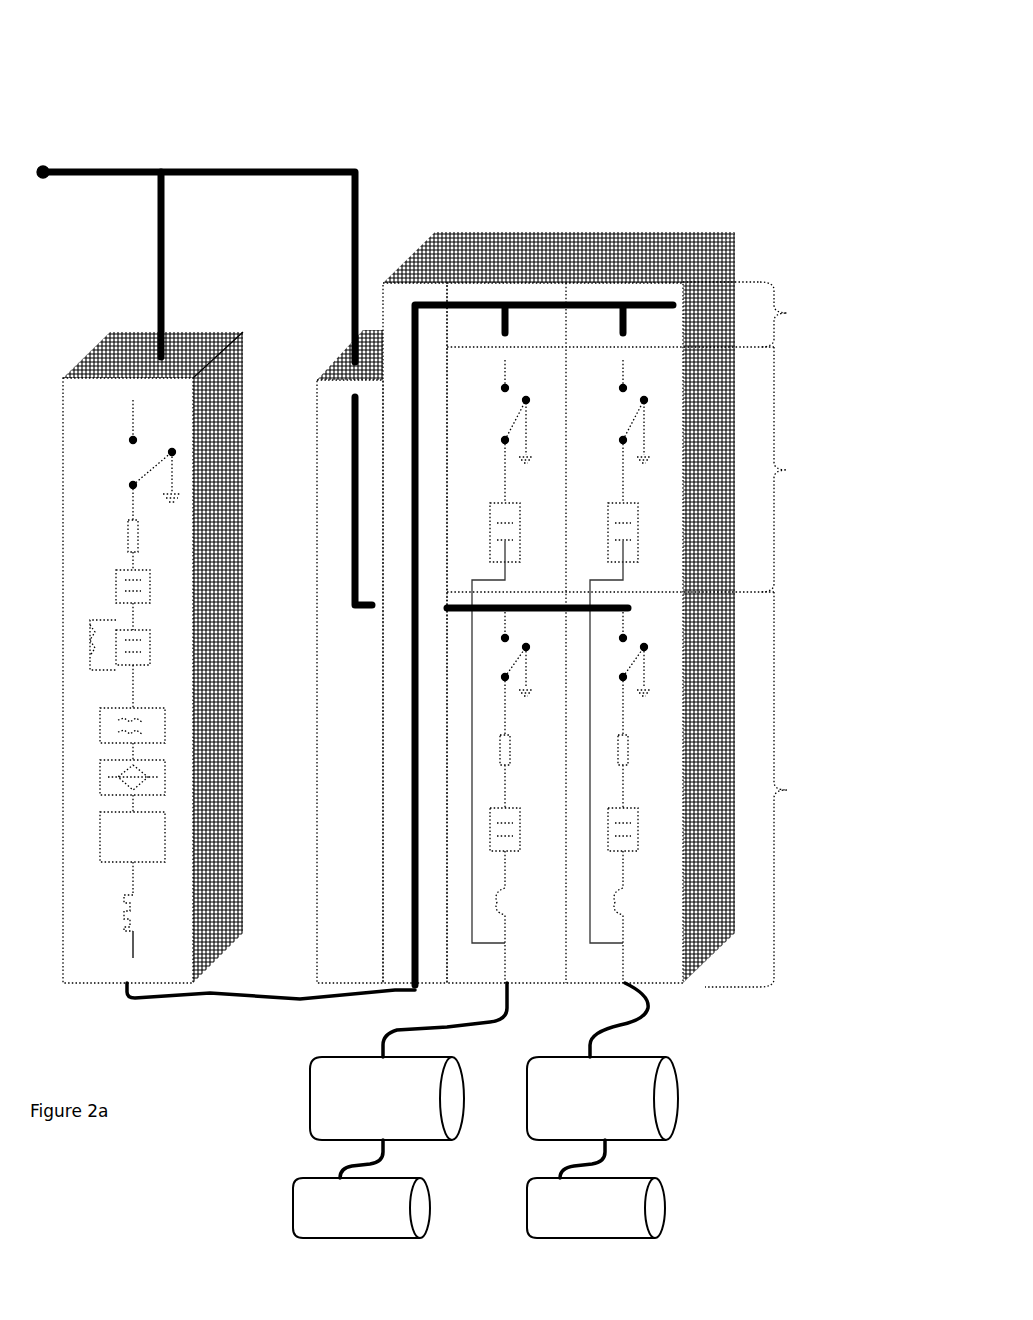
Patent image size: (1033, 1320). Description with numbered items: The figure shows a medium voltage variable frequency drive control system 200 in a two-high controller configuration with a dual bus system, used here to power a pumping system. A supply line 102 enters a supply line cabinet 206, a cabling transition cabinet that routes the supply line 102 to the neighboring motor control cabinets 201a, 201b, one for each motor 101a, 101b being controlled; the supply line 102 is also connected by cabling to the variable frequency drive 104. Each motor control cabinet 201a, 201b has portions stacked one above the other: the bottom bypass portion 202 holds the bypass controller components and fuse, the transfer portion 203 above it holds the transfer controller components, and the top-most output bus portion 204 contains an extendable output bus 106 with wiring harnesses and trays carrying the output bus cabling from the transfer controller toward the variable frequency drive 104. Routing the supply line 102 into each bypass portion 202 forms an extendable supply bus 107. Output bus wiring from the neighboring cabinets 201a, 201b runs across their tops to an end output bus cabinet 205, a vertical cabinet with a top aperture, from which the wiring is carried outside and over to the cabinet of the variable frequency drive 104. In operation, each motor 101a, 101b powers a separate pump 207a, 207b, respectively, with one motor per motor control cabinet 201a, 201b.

The medium voltage variable frequency drive control system 200 is at (135, 45).
The supply line 102 is at (100, 168).
The variable frequency drive 104 is at (134, 335).
The supply line cabinet 206 is at (330, 352).
The end output bus cabinet 205 is at (438, 252).
The motor control cabinet 201a is at (610, 521).
The motor control cabinet 201b is at (652, 258).
The extendable output bus 106 is at (662, 305).
The output bus portion 204 is at (815, 314).
The transfer portion 203 is at (819, 469).
The extendable supply bus 107 is at (630, 610).
The bypass portion 202 is at (789, 789).
The motor 101a is at (408, 1061).
The motor 101b is at (602, 1061).
The pump 207a is at (361, 1189).
The pump 207b is at (596, 1189).